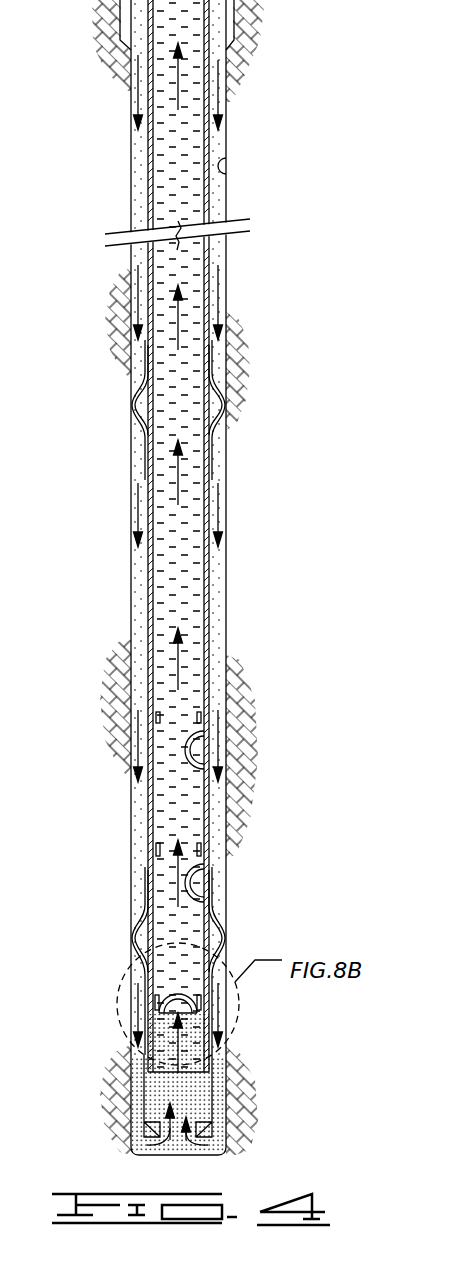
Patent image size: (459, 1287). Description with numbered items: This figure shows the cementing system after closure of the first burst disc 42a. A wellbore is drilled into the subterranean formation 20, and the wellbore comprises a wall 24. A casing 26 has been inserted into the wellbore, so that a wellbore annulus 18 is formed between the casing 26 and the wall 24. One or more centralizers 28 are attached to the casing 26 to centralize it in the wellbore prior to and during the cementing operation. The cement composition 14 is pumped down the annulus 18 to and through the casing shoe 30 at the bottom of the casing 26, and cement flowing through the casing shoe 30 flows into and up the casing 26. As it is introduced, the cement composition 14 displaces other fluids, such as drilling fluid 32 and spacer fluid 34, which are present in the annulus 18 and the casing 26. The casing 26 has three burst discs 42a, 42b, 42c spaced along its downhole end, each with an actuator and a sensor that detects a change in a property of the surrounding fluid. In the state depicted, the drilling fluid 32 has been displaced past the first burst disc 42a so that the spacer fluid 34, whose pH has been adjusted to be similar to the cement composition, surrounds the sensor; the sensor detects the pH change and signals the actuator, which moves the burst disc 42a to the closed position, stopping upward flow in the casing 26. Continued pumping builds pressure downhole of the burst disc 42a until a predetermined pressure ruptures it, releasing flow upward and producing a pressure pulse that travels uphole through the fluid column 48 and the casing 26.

The cement composition 14 is at (217, 570).
The wellbore annulus 18 is at (138, 188).
The subterranean formation 20 is at (294, 483).
The wall 24 is at (227, 172).
The casing 26 is at (150, 265).
The centralizer 28 is at (133, 415).
The casing shoe 30 is at (140, 1100).
The drilling fluid 32 is at (165, 583).
The spacer fluid 34 is at (190, 1093).
The first burst disc 42a is at (160, 990).
The second burst disc 42b is at (180, 884).
The third burst disc 42c is at (182, 748).
The fluid column 48 is at (185, 272).